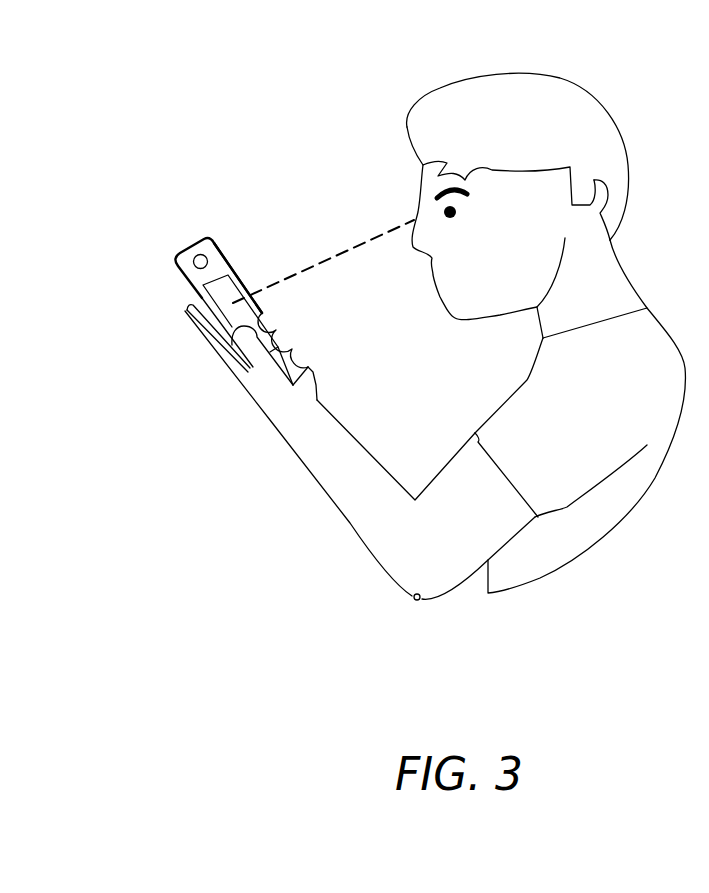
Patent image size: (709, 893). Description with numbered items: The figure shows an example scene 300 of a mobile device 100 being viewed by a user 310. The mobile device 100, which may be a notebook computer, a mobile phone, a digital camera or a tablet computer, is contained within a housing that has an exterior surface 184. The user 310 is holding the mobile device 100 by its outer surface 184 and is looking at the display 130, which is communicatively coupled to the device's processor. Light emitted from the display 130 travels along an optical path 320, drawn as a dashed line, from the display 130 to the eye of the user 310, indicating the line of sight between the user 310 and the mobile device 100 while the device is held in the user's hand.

The usage environment 300 is at (168, 48).
The user 310 is at (483, 68).
The mobile device 100 is at (170, 280).
The display 130 is at (224, 256).
The exterior surface 184 is at (247, 263).
The optical path 320 is at (361, 259).